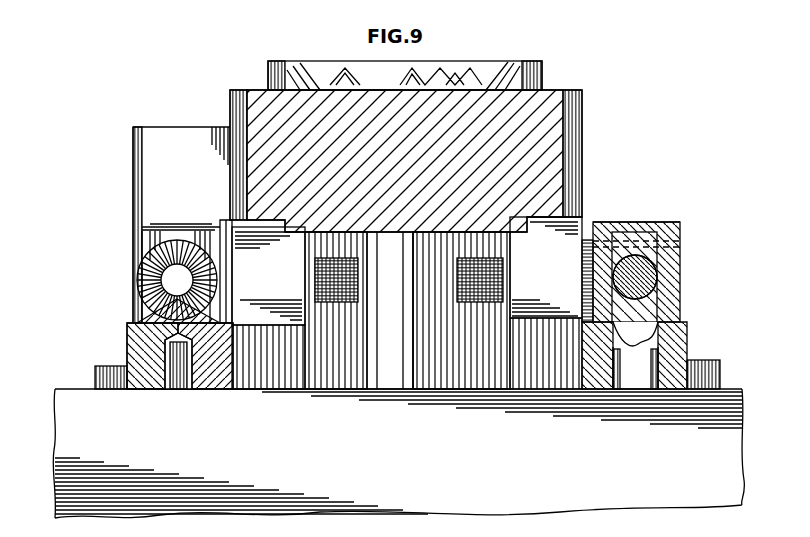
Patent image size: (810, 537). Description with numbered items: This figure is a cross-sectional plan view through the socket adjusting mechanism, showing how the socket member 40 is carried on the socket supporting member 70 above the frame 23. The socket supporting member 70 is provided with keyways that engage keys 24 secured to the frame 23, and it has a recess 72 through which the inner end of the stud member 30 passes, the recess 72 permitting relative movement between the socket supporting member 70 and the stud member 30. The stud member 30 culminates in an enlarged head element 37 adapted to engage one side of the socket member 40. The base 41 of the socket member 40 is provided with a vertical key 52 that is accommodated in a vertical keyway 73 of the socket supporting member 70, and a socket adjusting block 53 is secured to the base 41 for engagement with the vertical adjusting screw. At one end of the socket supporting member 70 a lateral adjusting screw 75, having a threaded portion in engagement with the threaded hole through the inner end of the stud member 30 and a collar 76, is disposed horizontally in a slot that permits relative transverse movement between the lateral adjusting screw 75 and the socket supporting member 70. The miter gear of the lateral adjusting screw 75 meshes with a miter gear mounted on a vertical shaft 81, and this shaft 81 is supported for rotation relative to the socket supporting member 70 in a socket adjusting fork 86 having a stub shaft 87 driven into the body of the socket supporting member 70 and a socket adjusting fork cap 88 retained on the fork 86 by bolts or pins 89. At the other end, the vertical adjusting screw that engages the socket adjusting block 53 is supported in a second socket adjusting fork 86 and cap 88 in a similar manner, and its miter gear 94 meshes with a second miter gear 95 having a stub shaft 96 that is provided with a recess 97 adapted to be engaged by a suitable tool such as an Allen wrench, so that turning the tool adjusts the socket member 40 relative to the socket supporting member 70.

The frame 23 is at (68, 409).
The keys 24 is at (97, 375).
The stud member 30 is at (463, 370).
The enlarged head element 37 is at (268, 68).
The socket member 40 is at (586, 103).
The base 41 is at (557, 133).
The vertical key 52 is at (399, 222).
The socket adjusting block 53 is at (143, 152).
The socket supporting member 70 is at (686, 325).
The recess 72 is at (327, 372).
The vertical keyway 73 is at (535, 222).
The lateral adjusting screw 75 is at (314, 282).
The collar 76 is at (507, 272).
The vertical shaft 81 is at (655, 278).
The socket adjusting fork 86 is at (140, 251).
The stub shaft 87 is at (645, 353).
The socket adjusting fork cap 88 is at (140, 231).
The bolts or pins 89 is at (682, 246).
The miter gear 94 is at (150, 284).
The second miter gear 95 is at (145, 316).
The stub shaft 96 is at (164, 389).
The recess 97 is at (182, 389).